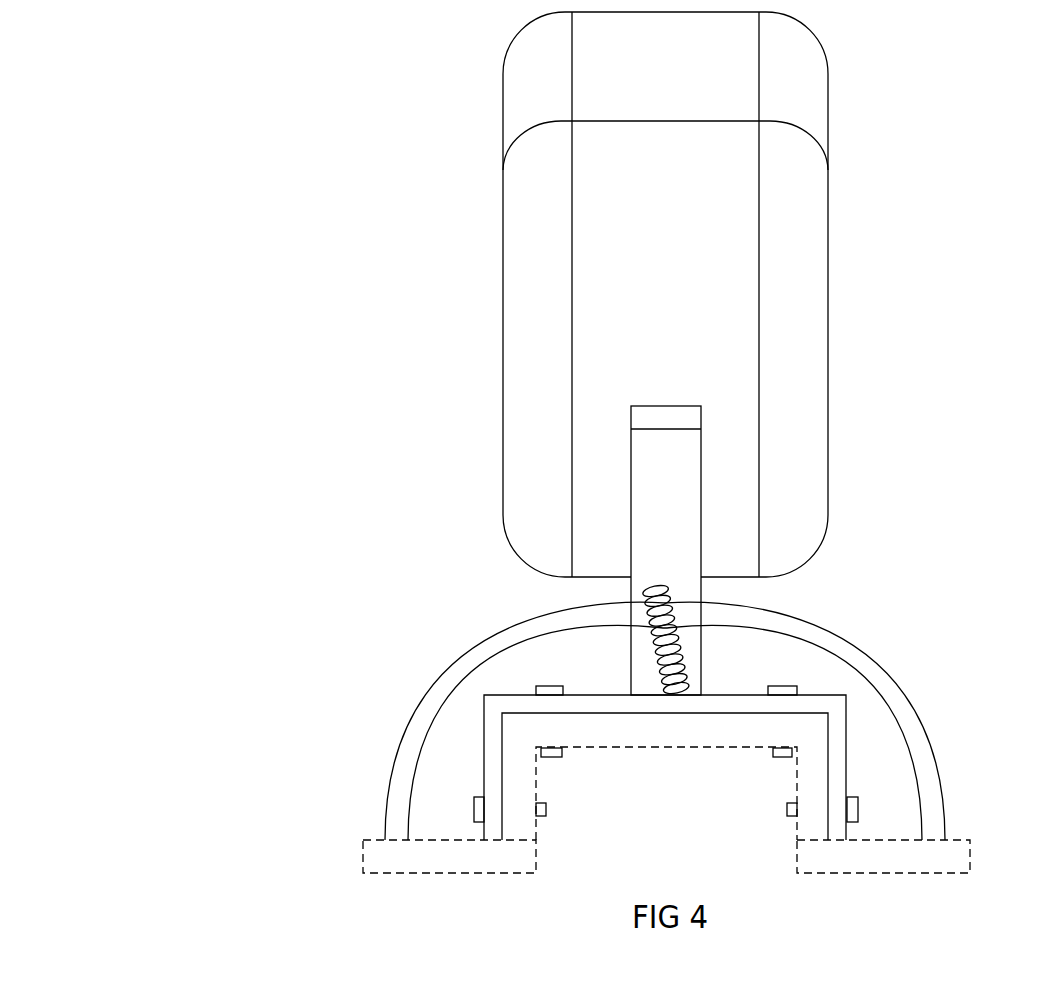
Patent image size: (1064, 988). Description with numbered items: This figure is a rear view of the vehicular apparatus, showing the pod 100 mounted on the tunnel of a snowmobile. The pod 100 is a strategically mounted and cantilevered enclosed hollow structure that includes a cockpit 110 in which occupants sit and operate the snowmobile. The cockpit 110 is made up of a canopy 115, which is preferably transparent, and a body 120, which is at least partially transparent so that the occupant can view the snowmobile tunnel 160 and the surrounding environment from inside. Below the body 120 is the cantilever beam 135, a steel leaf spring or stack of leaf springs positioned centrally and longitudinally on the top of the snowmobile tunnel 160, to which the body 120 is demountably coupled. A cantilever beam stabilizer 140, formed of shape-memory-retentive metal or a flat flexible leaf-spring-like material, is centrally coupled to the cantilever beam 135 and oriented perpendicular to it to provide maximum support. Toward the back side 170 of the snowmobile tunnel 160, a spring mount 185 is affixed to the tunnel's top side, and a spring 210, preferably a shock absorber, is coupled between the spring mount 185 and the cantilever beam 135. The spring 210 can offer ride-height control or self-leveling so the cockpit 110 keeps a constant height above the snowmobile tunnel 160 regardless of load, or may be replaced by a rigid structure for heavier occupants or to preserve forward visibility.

The pod 100 is at (237, 175).
The cockpit 110 is at (899, 587).
The canopy 115 is at (646, 94).
The body 120 is at (646, 306).
The cantilever beam 135 is at (647, 501).
The cantilever beam stabilizer 140 is at (418, 712).
The snowmobile tunnel 160 is at (970, 856).
The back side 170 is at (513, 853).
The spring mount 185 is at (631, 653).
The spring 210 is at (702, 675).